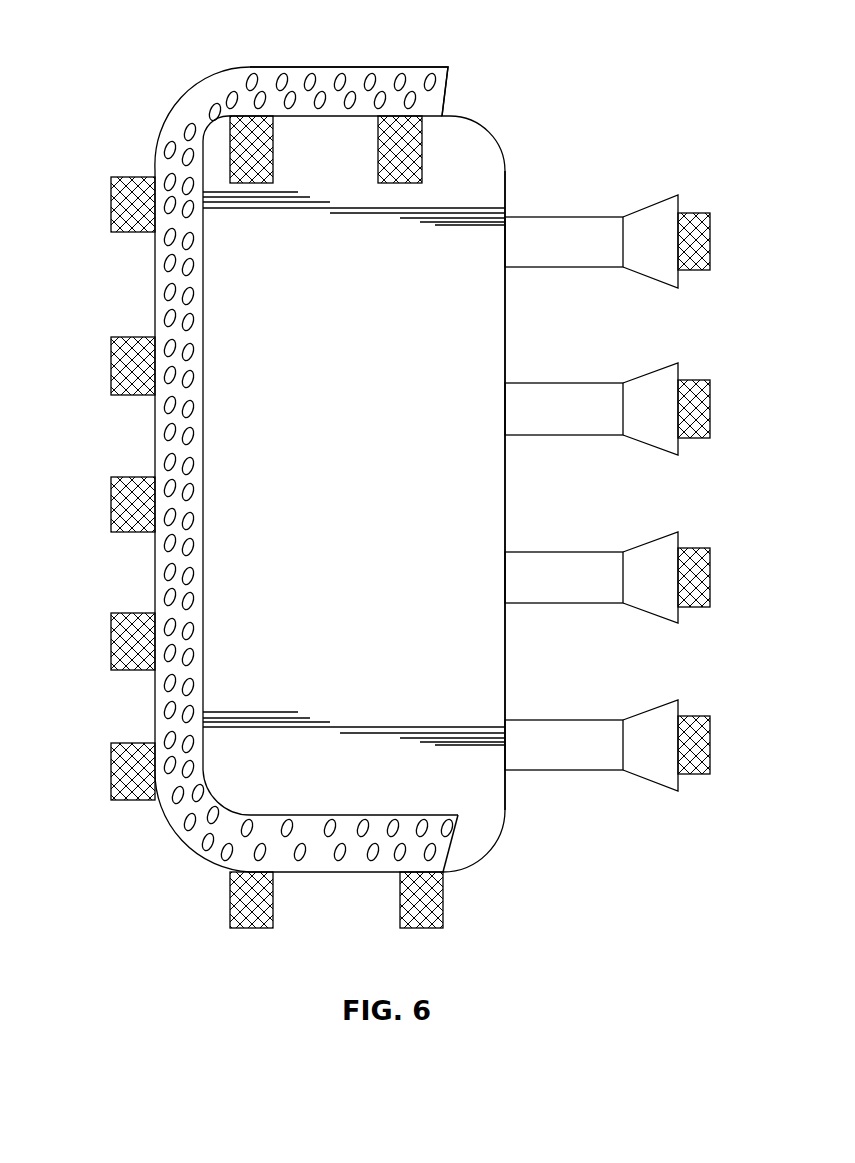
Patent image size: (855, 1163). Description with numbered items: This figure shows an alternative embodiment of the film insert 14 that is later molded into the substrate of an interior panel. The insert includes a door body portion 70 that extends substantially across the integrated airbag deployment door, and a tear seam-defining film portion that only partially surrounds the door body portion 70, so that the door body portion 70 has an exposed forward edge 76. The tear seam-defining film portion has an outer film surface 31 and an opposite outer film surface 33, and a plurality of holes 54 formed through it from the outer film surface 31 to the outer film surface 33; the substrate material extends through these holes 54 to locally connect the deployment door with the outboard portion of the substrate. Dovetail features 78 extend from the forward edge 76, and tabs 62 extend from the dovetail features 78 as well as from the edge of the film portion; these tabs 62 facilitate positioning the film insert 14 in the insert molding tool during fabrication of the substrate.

The film insert 14 is at (487, 180).
The outer film surface 31 is at (268, 75).
The outer film surface 33 is at (192, 225).
The holes 54 is at (162, 540).
The tabs 62 is at (118, 208).
The door body portion 70 is at (265, 462).
The forward edge 76 is at (505, 328).
The dovetail features 78 is at (585, 212).